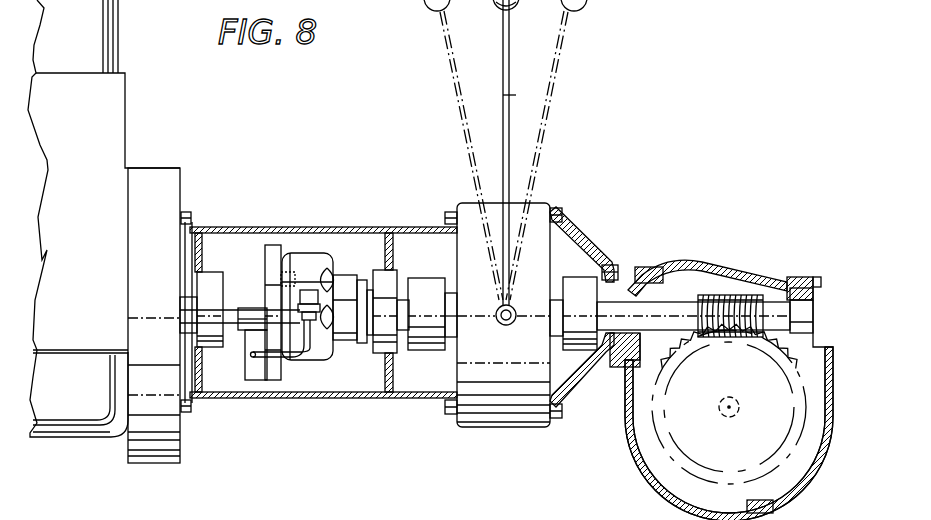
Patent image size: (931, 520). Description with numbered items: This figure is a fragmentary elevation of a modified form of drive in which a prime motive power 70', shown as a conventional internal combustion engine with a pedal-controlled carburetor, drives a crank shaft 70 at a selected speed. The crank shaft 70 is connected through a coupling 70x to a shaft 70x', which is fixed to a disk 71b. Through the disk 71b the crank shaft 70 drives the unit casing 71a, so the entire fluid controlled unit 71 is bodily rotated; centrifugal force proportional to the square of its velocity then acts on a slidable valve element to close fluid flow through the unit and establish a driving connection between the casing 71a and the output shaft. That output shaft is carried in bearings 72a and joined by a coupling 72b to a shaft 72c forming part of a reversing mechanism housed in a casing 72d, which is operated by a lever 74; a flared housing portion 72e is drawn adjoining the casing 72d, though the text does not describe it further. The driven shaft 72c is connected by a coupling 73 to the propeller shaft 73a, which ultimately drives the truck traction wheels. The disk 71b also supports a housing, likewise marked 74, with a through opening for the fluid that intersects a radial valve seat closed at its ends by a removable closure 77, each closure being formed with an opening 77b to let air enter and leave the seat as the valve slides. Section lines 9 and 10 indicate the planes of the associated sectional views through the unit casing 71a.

The prime motive power 70' is at (104, 218).
The crank shaft 70 is at (214, 315).
The coupling 70x is at (179, 301).
The shaft 70x' is at (247, 298).
The fluid controlled unit 71 is at (364, 259).
The unit casing 71a is at (307, 258).
The disk 71b is at (272, 257).
The bearings 72a is at (367, 358).
The coupling 72b is at (428, 283).
The shaft 72c is at (452, 332).
The casing 72d is at (488, 428).
The conical housing 72e is at (553, 305).
The coupling 73 is at (580, 350).
The propeller shaft 73a is at (683, 305).
The lever 74 is at (238, 426).
The section line 9- 9 is at (255, 328).
The section line 10- 10 is at (237, 333).
The removable closure 77 is at (249, 512).
The opening 77b is at (192, 510).